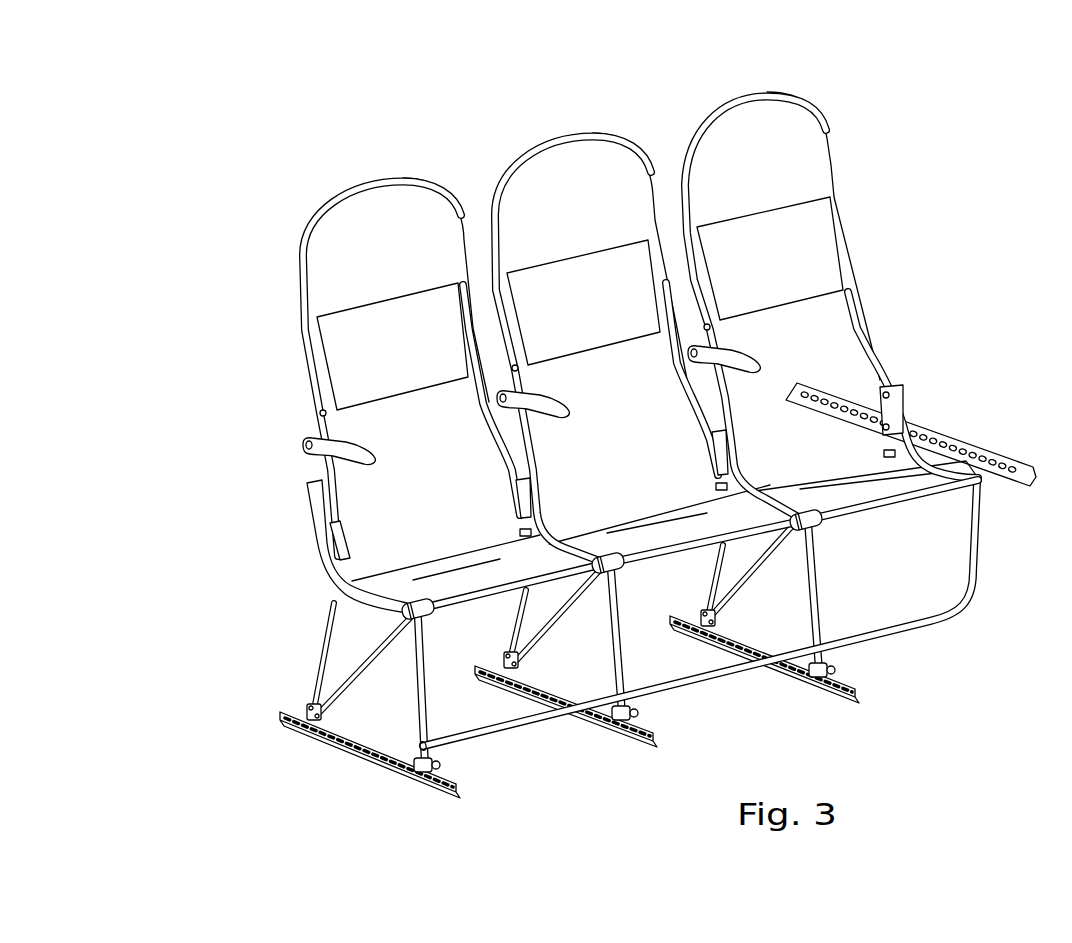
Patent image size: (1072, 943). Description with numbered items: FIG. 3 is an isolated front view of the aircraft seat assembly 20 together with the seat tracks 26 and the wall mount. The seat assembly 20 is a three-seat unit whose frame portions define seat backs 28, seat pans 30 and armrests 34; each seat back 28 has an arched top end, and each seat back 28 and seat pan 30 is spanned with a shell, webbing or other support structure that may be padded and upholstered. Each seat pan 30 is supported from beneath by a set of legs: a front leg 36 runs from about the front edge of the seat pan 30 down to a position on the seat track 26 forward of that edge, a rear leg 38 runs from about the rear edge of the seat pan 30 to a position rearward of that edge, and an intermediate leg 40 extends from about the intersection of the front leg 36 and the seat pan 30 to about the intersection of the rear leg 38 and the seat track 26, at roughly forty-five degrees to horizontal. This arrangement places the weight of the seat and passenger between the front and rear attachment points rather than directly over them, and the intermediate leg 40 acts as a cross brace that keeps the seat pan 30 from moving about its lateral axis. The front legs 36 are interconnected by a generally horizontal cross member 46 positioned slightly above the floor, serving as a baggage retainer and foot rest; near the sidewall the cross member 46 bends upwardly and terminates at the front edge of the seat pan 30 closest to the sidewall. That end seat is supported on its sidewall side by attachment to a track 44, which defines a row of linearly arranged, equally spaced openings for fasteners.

The seat assembly 20 is at (281, 186).
The seat back 28 is at (398, 202).
The armrest 34 is at (300, 437).
The rear leg 38 is at (323, 651).
The intermediate leg 40 is at (355, 664).
The front leg 36 is at (414, 704).
The seat pan 30 is at (443, 580).
The seat track 26 is at (354, 744).
The cross member 46 is at (507, 727).
The track 44 is at (950, 443).